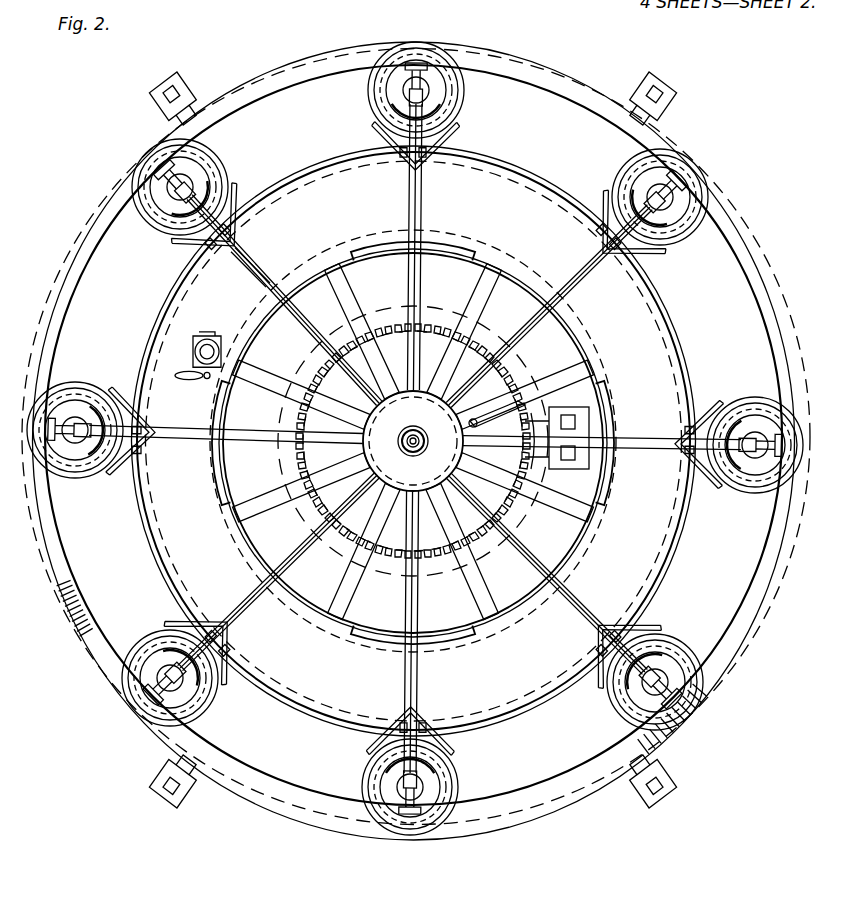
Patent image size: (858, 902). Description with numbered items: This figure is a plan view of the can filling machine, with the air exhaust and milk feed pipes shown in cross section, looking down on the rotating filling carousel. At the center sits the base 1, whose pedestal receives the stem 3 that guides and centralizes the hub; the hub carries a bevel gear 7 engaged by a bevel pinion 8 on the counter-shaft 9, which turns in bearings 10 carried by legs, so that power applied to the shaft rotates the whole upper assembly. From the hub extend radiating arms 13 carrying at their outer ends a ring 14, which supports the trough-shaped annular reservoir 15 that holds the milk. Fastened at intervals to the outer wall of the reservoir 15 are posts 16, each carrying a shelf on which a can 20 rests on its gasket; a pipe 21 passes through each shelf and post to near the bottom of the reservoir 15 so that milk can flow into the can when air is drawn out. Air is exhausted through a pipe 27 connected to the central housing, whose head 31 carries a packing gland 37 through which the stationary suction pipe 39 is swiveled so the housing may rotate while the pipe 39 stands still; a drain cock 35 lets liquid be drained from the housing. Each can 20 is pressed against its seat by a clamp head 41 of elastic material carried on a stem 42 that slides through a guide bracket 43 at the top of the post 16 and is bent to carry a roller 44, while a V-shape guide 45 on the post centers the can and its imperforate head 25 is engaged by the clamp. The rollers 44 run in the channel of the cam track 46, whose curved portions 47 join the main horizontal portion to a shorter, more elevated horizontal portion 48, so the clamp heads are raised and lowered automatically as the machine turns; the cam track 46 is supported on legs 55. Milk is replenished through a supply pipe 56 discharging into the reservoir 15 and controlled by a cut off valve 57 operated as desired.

The base 1 is at (302, 490).
The stem 3 is at (36, 466).
The bevel gear 7 is at (396, 560).
The bevel pinion 8 is at (508, 508).
The counter-shaft 9 is at (600, 470).
The bearings 10 is at (592, 420).
The radiating arms 13 is at (352, 300).
The ring 14 is at (313, 702).
The annular reservoir 15 is at (537, 730).
The posts 16 is at (148, 470).
The can 20 is at (96, 488).
The pipe 21 is at (244, 616).
The head 25 is at (136, 648).
The pipe 27 is at (302, 364).
The head 31 is at (413, 441).
The drain cock 35 is at (506, 380).
The packing gland 37 is at (413, 441).
The pipe 39 is at (426, 441).
The clamp heads 41 is at (748, 490).
The stem 42 is at (82, 420).
The guide bracket 43 is at (104, 468).
The roller 44 is at (140, 694).
The V-shape guide 45 is at (240, 634).
The cam track 46 is at (300, 64).
The curved portions 47 is at (72, 626).
The horizontal portion 48 is at (465, 838).
The legs 55 is at (200, 90).
The pipe 56 is at (194, 356).
The cut off valve 57 is at (220, 334).